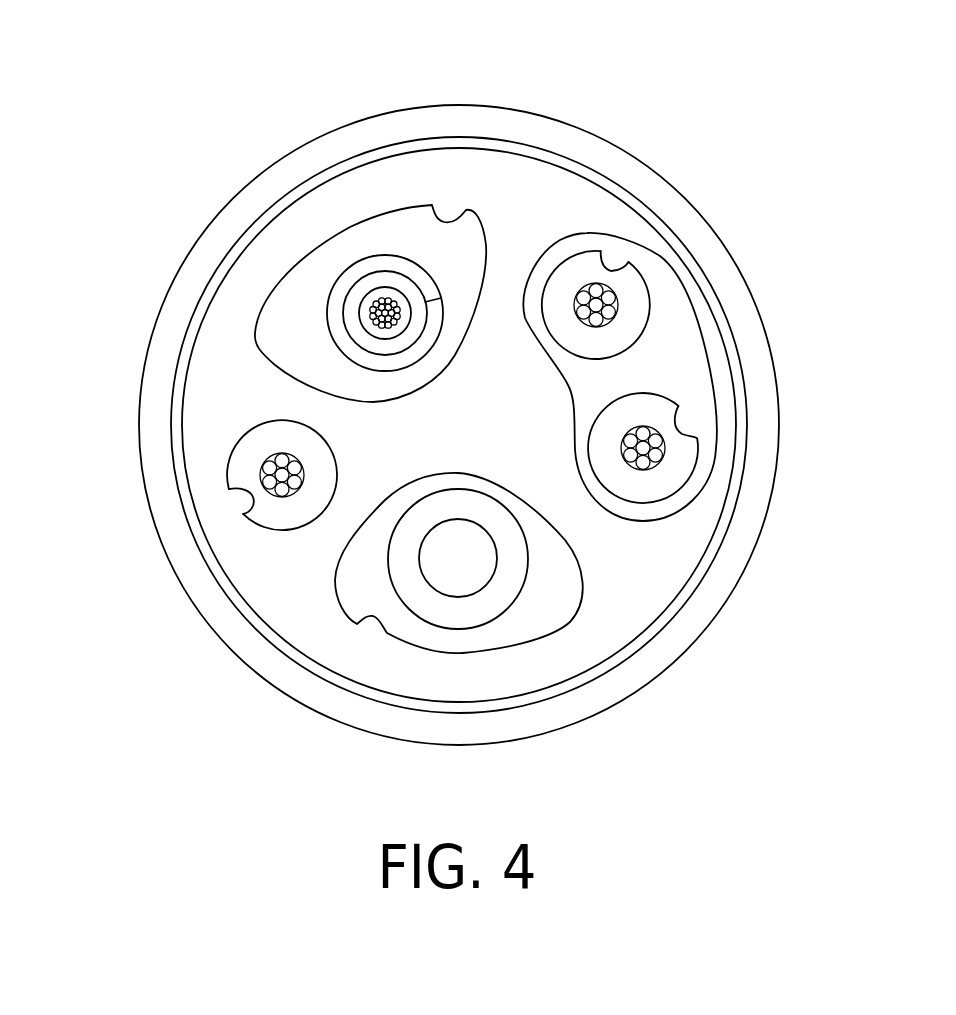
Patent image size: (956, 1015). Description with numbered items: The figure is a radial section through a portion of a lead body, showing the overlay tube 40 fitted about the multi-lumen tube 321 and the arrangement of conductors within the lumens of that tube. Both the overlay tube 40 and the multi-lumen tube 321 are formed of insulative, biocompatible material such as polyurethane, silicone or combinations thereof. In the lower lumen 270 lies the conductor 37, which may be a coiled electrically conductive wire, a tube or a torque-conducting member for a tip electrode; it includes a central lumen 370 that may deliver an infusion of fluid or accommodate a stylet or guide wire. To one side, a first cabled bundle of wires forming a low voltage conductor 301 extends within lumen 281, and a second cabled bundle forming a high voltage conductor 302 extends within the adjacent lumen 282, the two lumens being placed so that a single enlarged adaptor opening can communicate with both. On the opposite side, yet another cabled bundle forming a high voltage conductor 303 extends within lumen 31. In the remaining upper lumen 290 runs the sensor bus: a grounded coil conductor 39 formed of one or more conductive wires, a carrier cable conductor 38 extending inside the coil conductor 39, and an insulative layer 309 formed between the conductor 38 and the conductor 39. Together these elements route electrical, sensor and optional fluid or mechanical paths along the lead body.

The overlay tube 40 is at (190, 290).
The multi-lumen tube 321 is at (326, 215).
The lumen 290 is at (432, 205).
The grounded coil conductor 39 is at (342, 337).
The insulative layer 309 is at (362, 298).
The carrier cable conductor 38 is at (392, 298).
The high voltage conductor 302 is at (617, 296).
The lumen 282 is at (601, 258).
The low voltage conductor 301 is at (653, 468).
The lumen 281 is at (674, 413).
The high voltage conductor 303 is at (267, 455).
The lumen 31 is at (252, 510).
The lumen 270 is at (353, 622).
The conductor 37 is at (472, 607).
The lumen 370 is at (470, 548).